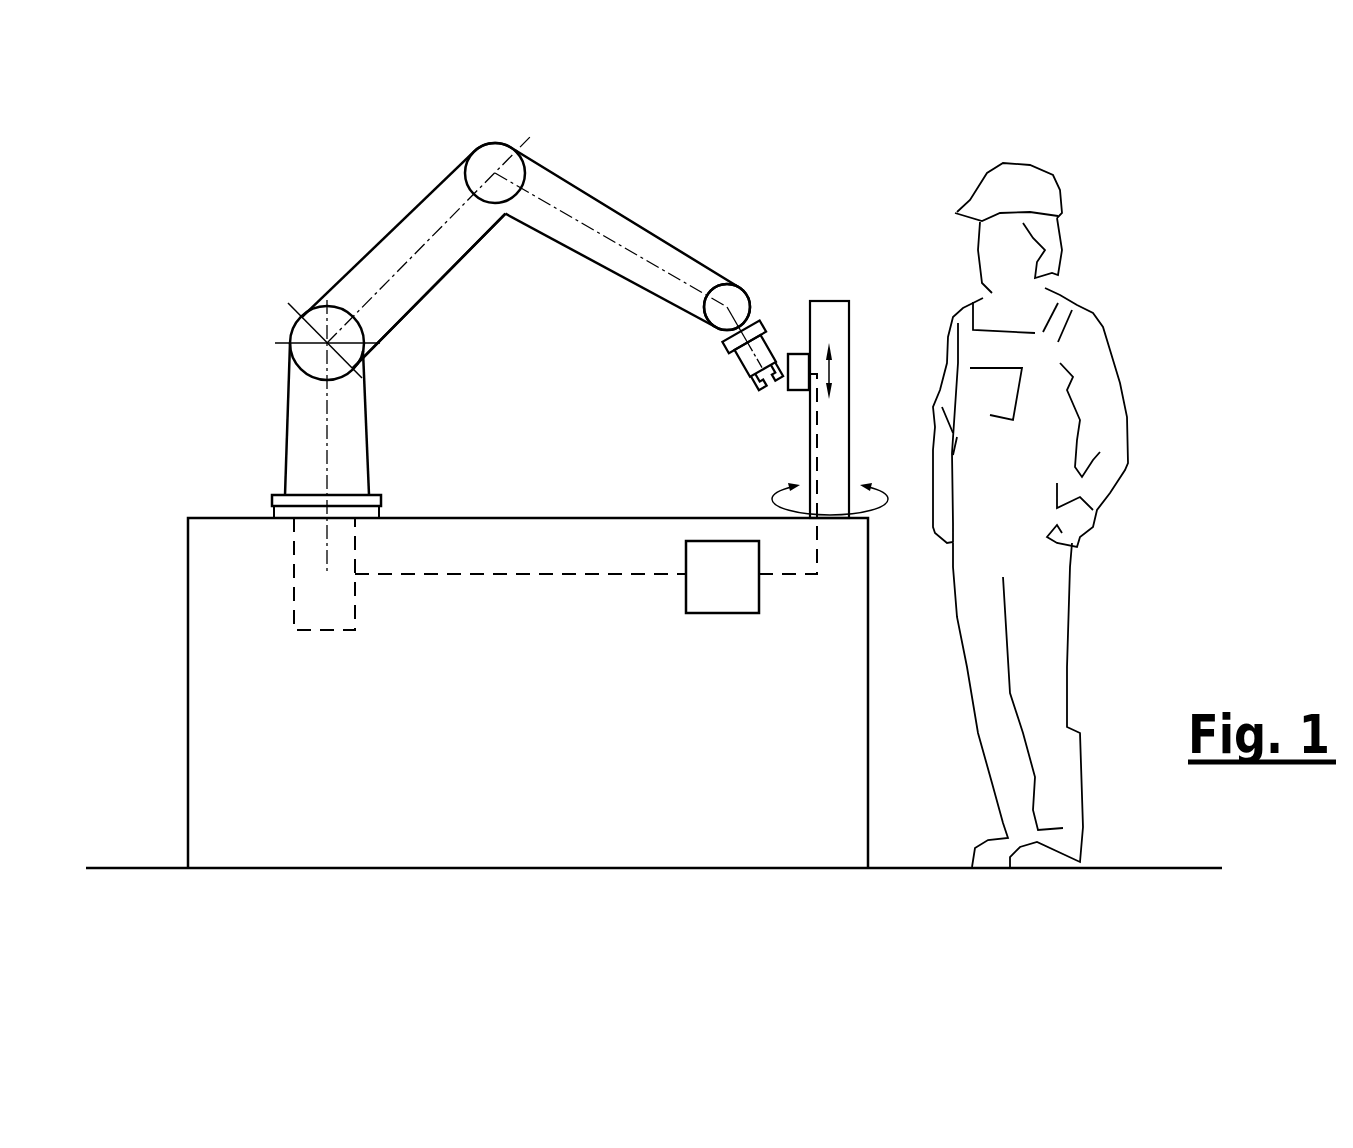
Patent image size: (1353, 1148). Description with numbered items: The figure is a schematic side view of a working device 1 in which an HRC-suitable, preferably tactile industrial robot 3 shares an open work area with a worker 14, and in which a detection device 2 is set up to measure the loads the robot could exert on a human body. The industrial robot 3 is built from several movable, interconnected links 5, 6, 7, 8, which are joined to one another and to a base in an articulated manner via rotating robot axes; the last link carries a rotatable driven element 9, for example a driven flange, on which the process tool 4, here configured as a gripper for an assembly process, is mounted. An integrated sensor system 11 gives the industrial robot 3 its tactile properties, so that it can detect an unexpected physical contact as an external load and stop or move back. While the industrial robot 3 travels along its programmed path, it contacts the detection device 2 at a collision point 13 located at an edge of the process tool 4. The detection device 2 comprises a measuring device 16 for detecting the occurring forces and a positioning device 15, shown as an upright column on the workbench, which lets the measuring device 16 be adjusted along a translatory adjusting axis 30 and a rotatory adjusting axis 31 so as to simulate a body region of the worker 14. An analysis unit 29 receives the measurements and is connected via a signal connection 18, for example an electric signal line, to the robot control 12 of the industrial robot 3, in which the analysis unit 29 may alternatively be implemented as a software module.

The working device 1 is at (222, 321).
The detection device 2 is at (850, 266).
The industrial robot 3 is at (402, 218).
The process tool 4 is at (750, 360).
The link 5 is at (302, 416).
The link 6 is at (417, 287).
The link 7 is at (617, 222).
The link 8 is at (720, 343).
The driven element 9 is at (727, 307).
The sensor system 11 is at (462, 155).
The robot control 12 is at (348, 607).
The collision point 13 is at (787, 378).
The worker 14 is at (1105, 363).
The positioning device 15 is at (842, 324).
The measuring device 16 is at (799, 357).
The signal connection 18 is at (540, 574).
The analysis unit 29 is at (728, 597).
The adjusting axis 30 is at (832, 370).
The adjusting axis 31 is at (772, 502).